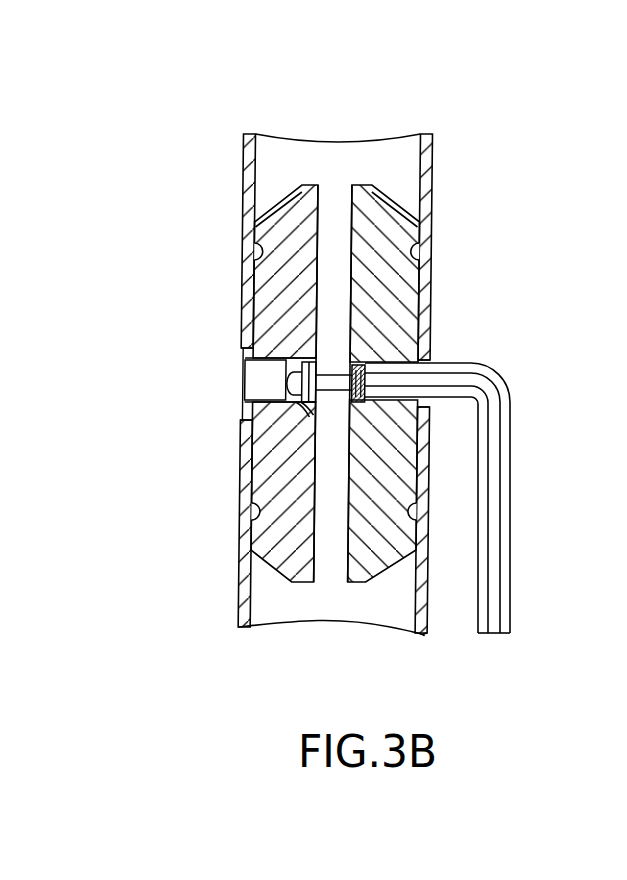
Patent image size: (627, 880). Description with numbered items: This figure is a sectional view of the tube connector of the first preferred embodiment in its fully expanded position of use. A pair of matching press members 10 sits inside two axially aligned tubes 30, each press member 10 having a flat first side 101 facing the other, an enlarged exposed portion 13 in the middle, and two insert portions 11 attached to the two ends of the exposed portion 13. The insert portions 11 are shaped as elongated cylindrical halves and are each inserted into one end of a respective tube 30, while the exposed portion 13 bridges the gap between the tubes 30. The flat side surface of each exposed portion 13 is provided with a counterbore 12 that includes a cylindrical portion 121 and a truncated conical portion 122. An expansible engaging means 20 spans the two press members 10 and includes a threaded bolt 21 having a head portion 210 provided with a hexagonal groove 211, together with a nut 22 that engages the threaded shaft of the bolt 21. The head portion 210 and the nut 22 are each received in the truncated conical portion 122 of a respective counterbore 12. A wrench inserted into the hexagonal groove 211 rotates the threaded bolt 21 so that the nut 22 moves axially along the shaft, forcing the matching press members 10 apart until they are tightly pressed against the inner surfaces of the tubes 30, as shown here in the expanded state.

The tube 30 is at (433, 153).
The insert portion 11 is at (428, 217).
The flat first side 101 is at (337, 213).
The exposed portion 13 is at (247, 363).
The expansible engaging means 20 is at (161, 255).
The threaded bolt 21 is at (272, 377).
The nut 22 is at (303, 358).
The cylindrical portion 121 is at (260, 387).
The truncated conical portion 122 is at (292, 421).
The press member 10 is at (427, 360).
The counterbore 12 is at (487, 366).
The head portion 210 is at (358, 352).
The hexagonal groove 211 is at (367, 352).